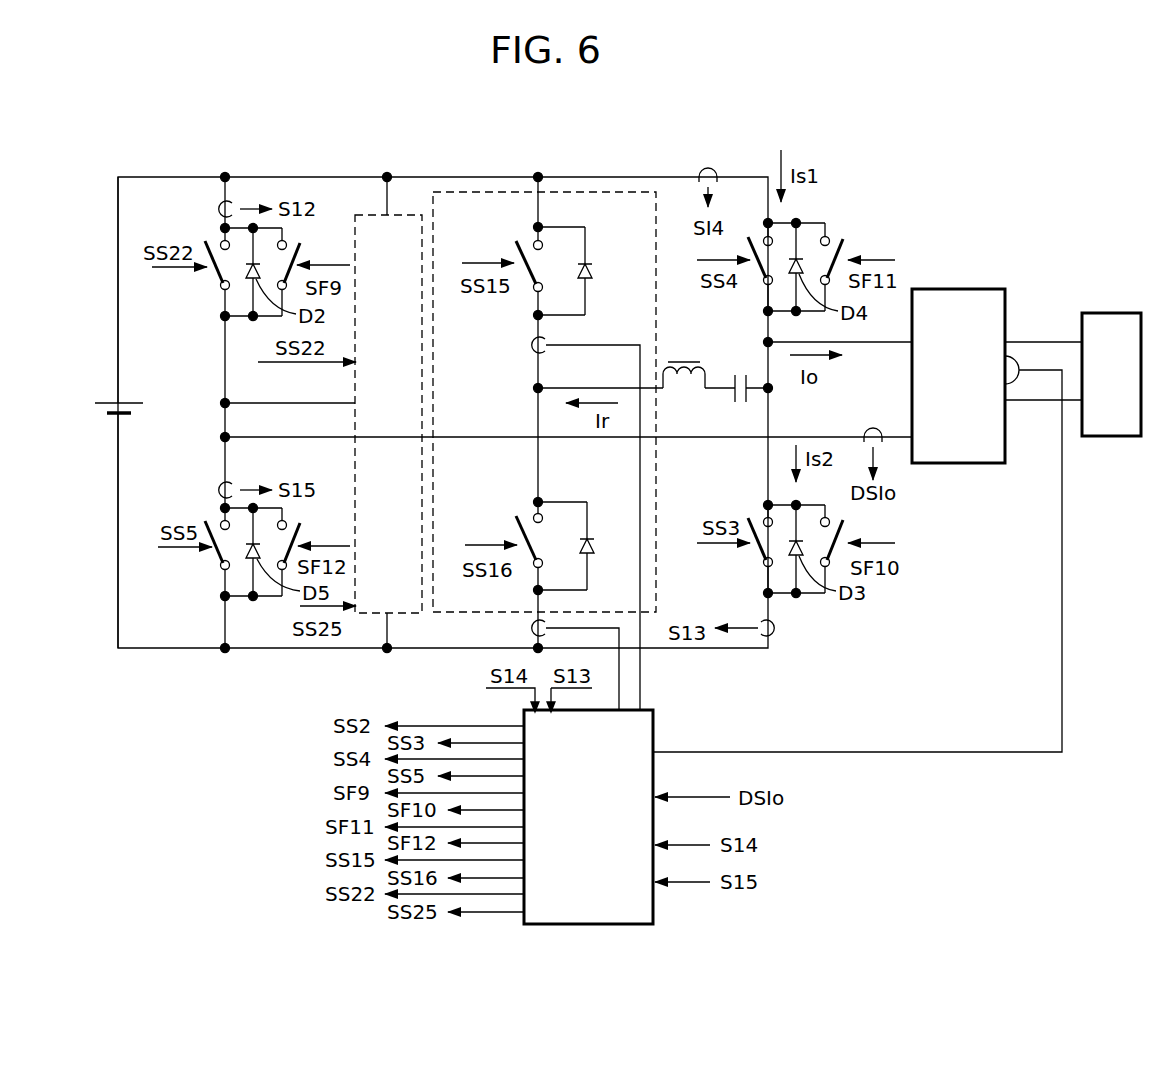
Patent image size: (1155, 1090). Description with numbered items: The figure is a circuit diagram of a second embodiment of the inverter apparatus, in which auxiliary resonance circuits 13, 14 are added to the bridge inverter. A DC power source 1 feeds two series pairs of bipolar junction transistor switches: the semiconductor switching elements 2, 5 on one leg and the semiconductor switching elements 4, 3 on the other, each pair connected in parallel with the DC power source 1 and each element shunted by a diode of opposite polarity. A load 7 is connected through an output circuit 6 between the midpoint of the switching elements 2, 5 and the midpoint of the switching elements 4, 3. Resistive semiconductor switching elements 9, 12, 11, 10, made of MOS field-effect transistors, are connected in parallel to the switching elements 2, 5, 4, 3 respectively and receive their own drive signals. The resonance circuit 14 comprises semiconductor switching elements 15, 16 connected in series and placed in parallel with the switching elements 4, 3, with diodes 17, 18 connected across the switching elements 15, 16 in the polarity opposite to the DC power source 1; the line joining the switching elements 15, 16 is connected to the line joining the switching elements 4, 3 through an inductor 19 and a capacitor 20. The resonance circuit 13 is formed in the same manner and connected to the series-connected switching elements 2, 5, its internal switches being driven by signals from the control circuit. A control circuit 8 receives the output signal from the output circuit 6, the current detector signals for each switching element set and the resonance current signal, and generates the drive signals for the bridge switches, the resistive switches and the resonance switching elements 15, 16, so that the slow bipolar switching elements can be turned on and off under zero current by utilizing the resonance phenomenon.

The DC power source 1 is at (100, 414).
The semiconductor switching element 2 is at (213, 283).
The semiconductor switching element 3 is at (758, 552).
The semiconductor switching element 4 is at (758, 283).
The semiconductor switching element 5 is at (214, 562).
The output circuit 6 is at (985, 289).
The load 7 is at (1115, 313).
The control circuit 8 is at (655, 740).
The resistive semiconductor switching element 9 is at (302, 253).
The resistive semiconductor switching element 10 is at (845, 533).
The resistive semiconductor switching element 11 is at (845, 248).
The resistive semiconductor switching element 12 is at (302, 533).
The auxiliary resonance circuit 13 is at (397, 210).
The auxiliary resonance circuit 14 is at (614, 190).
The semiconductor switching element 15 is at (513, 252).
The semiconductor switching element 16 is at (515, 530).
The diode 17 is at (594, 270).
The diode 18 is at (597, 546).
The inductor 19 is at (687, 378).
The capacitor 20 is at (749, 393).